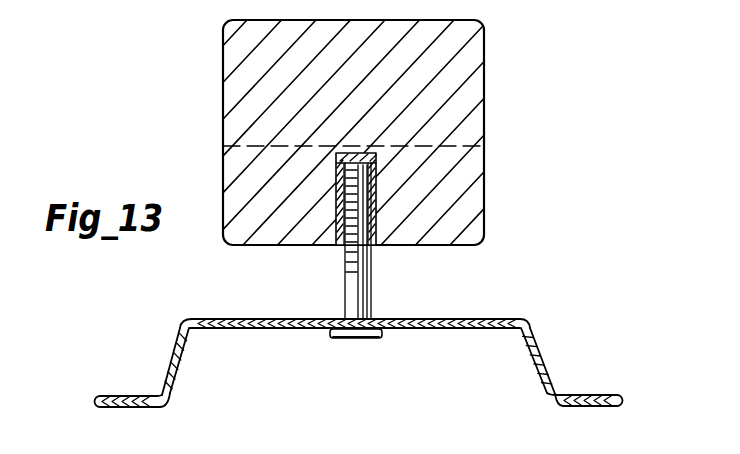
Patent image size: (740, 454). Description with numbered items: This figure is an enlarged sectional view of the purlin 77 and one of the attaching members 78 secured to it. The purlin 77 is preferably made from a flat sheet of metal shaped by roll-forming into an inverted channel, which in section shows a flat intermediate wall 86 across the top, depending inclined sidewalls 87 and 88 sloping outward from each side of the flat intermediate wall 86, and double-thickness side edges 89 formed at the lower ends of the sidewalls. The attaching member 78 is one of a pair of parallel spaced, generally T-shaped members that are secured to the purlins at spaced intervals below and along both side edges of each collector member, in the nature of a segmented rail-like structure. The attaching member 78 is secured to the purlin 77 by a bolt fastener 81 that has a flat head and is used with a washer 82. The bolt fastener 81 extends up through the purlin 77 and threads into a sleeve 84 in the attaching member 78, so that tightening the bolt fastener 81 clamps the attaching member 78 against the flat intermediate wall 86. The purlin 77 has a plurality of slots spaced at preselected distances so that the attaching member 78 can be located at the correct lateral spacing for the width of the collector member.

The purlin 77 is at (163, 331).
The attaching member 78 is at (478, 85).
The bolt fastener 81 is at (348, 280).
The washer 82 is at (434, 329).
The sleeve 84 is at (376, 226).
The flat intermediate wall 86 is at (554, 304).
The inclined sidewall 87 is at (178, 358).
The inclined sidewall 88 is at (547, 367).
The double-thickness side edge 89 is at (101, 400).